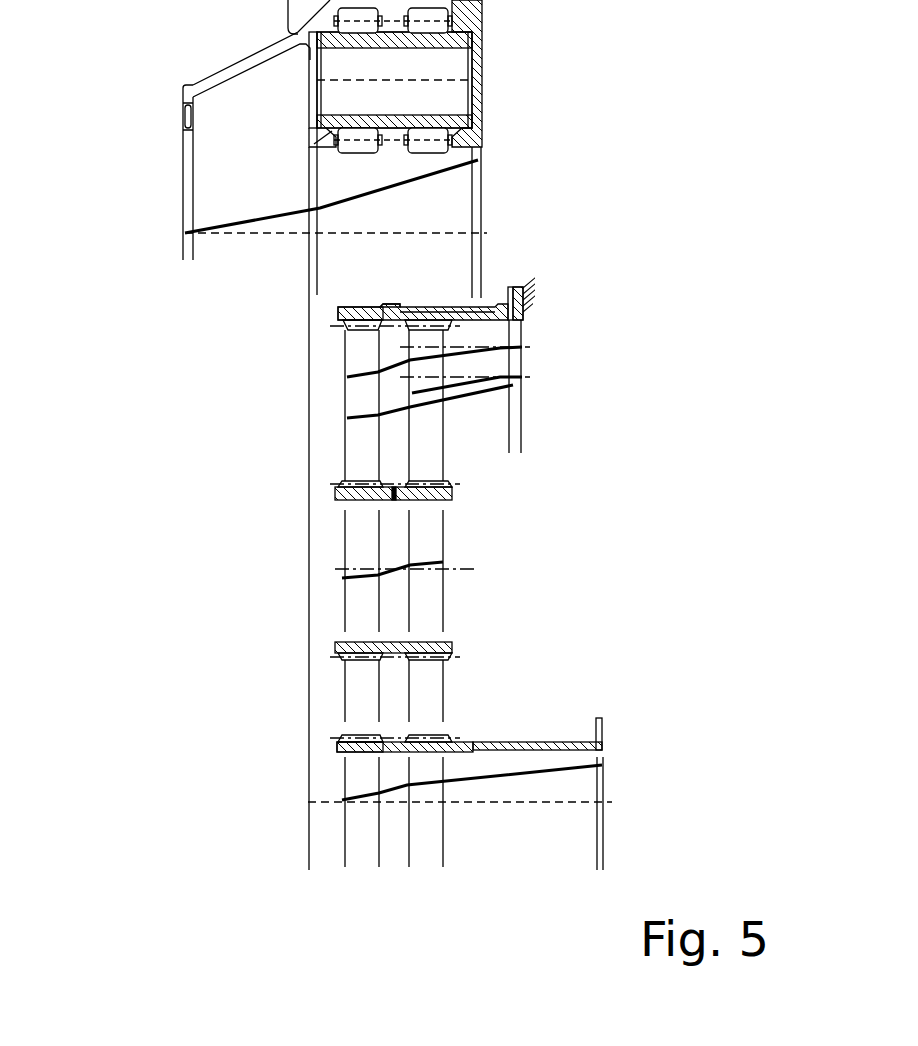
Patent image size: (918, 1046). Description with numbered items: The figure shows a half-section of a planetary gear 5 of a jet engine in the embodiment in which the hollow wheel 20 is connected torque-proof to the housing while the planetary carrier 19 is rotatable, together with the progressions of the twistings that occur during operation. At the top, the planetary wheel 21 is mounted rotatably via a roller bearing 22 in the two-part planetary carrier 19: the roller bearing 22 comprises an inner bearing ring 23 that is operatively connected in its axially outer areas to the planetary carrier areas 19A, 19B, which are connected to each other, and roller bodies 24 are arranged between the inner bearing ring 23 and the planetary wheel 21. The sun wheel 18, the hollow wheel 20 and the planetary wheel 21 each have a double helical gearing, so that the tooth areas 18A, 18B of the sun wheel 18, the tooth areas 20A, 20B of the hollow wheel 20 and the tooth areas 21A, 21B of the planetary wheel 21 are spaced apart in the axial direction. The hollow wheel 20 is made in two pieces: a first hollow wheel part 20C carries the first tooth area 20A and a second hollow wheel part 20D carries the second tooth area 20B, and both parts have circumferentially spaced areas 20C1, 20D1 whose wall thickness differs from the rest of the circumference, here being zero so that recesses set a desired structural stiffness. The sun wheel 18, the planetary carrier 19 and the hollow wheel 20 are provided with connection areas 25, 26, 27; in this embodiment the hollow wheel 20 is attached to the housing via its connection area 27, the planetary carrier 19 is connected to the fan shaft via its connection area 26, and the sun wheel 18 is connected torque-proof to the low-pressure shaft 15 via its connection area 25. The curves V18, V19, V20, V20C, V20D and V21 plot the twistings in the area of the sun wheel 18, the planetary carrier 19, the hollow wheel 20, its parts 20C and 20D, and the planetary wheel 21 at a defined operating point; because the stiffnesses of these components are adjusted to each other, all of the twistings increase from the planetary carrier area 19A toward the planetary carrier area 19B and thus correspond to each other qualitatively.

The planetary gear 5 is at (100, 325).
The low-pressure shaft 15 is at (553, 741).
The sun wheel 18 is at (369, 732).
The tooth area of the sun wheel 18A is at (345, 753).
The tooth area of the sun wheel 18B is at (415, 737).
The planetary carrier 19 is at (394, 117).
The planetary carrier area 19A is at (308, 90).
The planetary carrier area 19B is at (478, 58).
The hollow wheel 20 is at (467, 317).
The tooth area of the hollow wheel 20A is at (338, 311).
The tooth area of the hollow wheel 20B is at (348, 328).
The first hollow wheel part 20C is at (518, 287).
The area of the first hollow wheel part 20C1 is at (467, 303).
The second hollow wheel part 20D is at (530, 300).
The area of the second hollow wheel part 20D1 is at (545, 321).
The planetary wheel 21 is at (366, 468).
The tooth area of the planetary wheel 21A is at (337, 494).
The tooth area of the planetary wheel 21B is at (394, 487).
The roller bearing 22 is at (322, 152).
The inner bearing ring 23 is at (315, 120).
The roller bodies 24 is at (420, 150).
The connection area of the sun wheel 25 is at (514, 733).
The connection area of the planetary carrier 26 is at (148, 92).
The connection area of the hollow wheel 27 is at (495, 276).
The progression of the twisting of the sun wheel V18 is at (490, 779).
The progression of the twisting of the planetary carrier V19 is at (232, 226).
The progression of the twisting of the hollow wheel V20 is at (376, 376).
The progression of the twisting of the first hollow wheel part V20C is at (516, 386).
The progression of the twisting of the second hollow wheel part V20D is at (522, 350).
The progression of the twisting of the planetary wheel V21 is at (432, 564).